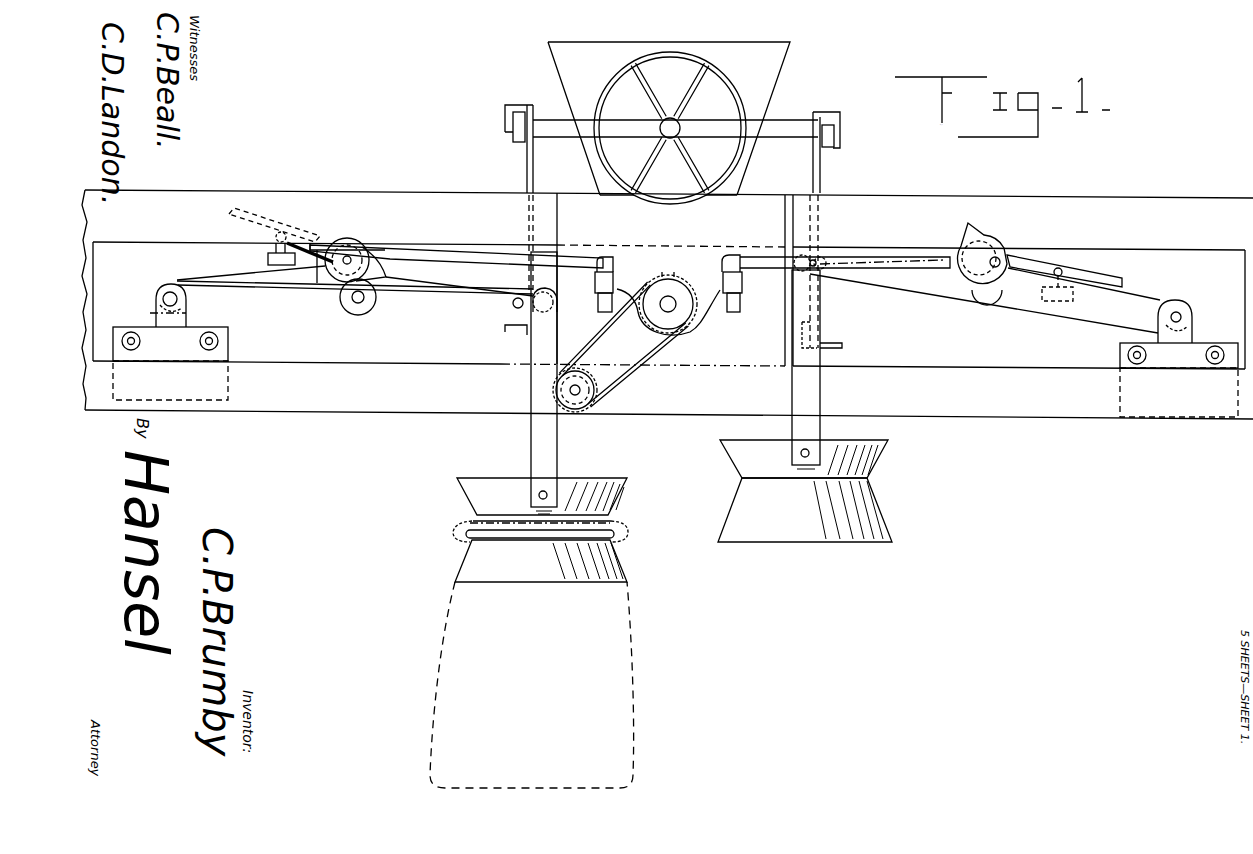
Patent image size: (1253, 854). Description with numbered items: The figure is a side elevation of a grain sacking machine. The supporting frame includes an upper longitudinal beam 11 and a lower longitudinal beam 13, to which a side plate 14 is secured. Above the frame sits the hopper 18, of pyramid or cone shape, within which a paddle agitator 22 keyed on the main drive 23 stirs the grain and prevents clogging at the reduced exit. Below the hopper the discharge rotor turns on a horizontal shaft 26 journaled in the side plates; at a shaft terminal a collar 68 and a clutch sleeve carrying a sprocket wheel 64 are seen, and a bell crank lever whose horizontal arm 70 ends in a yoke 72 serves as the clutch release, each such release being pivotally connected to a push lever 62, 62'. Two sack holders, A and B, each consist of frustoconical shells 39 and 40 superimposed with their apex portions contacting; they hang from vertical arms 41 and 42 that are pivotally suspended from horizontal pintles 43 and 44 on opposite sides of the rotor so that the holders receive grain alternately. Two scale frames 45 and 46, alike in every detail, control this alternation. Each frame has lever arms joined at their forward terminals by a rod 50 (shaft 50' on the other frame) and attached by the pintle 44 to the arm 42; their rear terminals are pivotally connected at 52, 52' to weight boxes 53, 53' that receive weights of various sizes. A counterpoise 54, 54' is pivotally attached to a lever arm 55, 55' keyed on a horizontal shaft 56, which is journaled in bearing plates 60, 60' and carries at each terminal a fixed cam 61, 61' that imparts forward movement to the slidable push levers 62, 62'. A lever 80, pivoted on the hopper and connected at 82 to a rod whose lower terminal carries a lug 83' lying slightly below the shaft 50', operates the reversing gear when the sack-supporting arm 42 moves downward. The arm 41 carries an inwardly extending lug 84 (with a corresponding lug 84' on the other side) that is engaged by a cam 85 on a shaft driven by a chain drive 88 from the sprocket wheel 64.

The upper longitudinal beam 11 is at (1198, 197).
The lower longitudinal beam 13 is at (1047, 402).
The side plate 14 is at (753, 393).
The hopper 18 is at (752, 62).
The paddle agitator 22 is at (636, 60).
The main drive shaft 23 is at (661, 125).
The horizontal shaft 26 is at (670, 308).
The frustoconical shell 39 is at (617, 500).
The frustoconical shell 40 is at (613, 573).
The vertical arm 41 is at (540, 451).
The vertical arm 42 is at (810, 438).
The horizontal pintle 43 is at (535, 290).
The horizontal pintle 44 is at (824, 259).
The scale frame 45 is at (1085, 319).
The scale frame 46 is at (405, 319).
The lateral rod 50 is at (866, 242).
The lateral rod 50' is at (489, 327).
The pivot 52 is at (1193, 315).
The pivot 52' is at (163, 294).
The weight box 53 is at (1179, 403).
The weight box 53' is at (196, 363).
The counterpoise 54 is at (1030, 332).
The counterpoise 54' is at (302, 304).
The lever arm 55 is at (1153, 275).
The lever arm 55' is at (344, 276).
The horizontal shaft 56 is at (1003, 253).
The bearing plate 60 is at (1081, 268).
The bearing plate 60' is at (316, 204).
The cam 61 is at (992, 258).
The cam 61' is at (386, 259).
The push lever 62 is at (875, 251).
The push lever 62' is at (456, 209).
The sprocket wheel 64 is at (645, 312).
The collar 68 is at (688, 314).
The horizontal arm 70 is at (640, 280).
The terminal yoke 72 is at (673, 275).
The lever 80 is at (516, 132).
The pivotal connection 82 is at (509, 122).
The lateral lug 83' is at (510, 338).
The lateral lug 84 is at (842, 338).
The lateral lug 84' is at (486, 384).
The cam 85 is at (545, 377).
The chain drive 88 is at (622, 392).